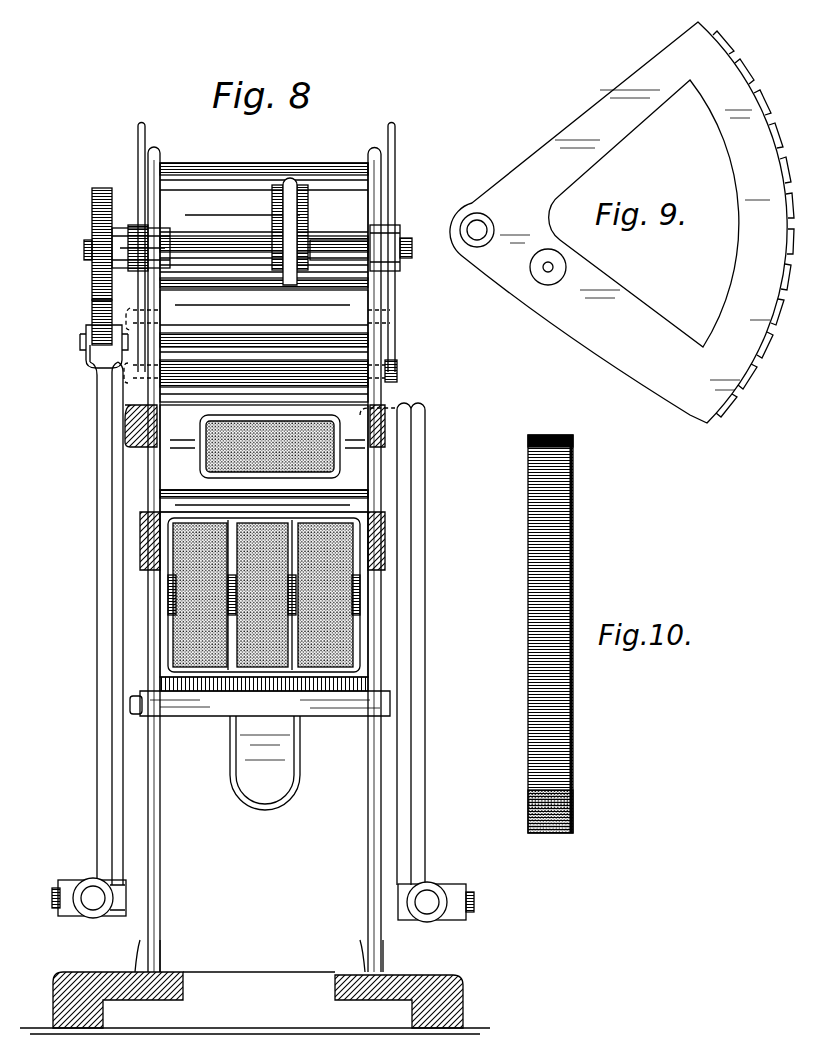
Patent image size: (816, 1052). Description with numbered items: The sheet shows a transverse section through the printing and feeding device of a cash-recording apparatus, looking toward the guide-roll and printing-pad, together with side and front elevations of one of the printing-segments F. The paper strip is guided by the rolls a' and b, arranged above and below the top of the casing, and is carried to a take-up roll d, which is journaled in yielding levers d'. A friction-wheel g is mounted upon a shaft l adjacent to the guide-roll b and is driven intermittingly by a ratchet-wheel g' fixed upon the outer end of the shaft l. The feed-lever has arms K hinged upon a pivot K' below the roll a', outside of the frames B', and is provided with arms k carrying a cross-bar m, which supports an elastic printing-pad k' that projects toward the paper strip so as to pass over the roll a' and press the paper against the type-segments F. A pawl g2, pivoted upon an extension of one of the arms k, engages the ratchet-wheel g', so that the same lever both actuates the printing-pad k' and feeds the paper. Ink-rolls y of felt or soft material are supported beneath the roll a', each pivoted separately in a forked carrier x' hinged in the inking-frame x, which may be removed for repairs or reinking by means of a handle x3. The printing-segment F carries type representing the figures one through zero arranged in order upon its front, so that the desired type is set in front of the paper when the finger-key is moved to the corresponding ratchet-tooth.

In FIG. 8, the yielding levers d' is at (249, 246).
In FIG. 8, the take-up roll d is at (264, 212).
In FIG. 8, the friction-wheel g is at (290, 211).
In FIG. 8, the ratchet-wheel g' is at (80, 244).
In FIG. 8, the shaft l is at (236, 245).
In FIG. 8, the pawl g2 is at (98, 318).
In FIG. 8, the guide-roll b is at (260, 346).
In FIG. 8, the frames B' is at (238, 559).
In FIG. 8, the arms k is at (258, 615).
In FIG. 8, the cross-bar m is at (372, 412).
In FIG. 8, the printing-pad k' is at (311, 447).
In FIG. 8, the guide-roll a' is at (264, 497).
In FIG. 8, the ink-rolls y is at (173, 546).
In FIG. 8, the forked carrier x' is at (215, 644).
In FIG. 8, the frame x is at (204, 594).
In FIG. 8, the handle x3 is at (265, 763).
In FIG. 8, the arms K is at (258, 896).
In FIG. 8, the pivot K' is at (255, 957).
In FIG. 9, the printing-segments F is at (622, 222).
In FIG. 10, the printing-segments F is at (563, 634).